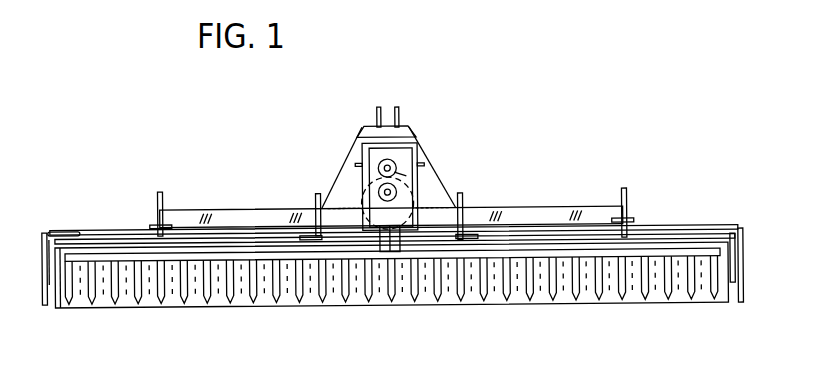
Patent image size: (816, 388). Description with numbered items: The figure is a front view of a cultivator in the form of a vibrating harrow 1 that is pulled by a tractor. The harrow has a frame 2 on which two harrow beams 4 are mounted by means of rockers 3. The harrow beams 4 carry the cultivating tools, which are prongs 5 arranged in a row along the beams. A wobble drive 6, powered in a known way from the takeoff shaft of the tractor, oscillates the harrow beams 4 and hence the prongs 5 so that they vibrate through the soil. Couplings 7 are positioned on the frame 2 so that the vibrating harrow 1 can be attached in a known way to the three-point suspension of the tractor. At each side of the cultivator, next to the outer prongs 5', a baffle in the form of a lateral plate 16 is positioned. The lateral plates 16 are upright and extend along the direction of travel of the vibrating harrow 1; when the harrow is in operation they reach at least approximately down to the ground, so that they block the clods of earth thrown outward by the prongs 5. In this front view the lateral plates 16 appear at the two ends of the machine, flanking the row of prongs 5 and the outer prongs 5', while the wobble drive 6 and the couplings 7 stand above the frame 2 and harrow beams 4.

The vibrating harrow 1 is at (525, 216).
The frame 2 is at (592, 215).
The rockers 3 is at (170, 245).
The harrow beams 4 is at (125, 256).
The prongs 5 is at (391, 310).
The outer prongs 5' is at (391, 310).
The wobble drive 6 is at (400, 160).
The couplings 7 is at (400, 110).
The lateral plates 16 is at (43, 296).